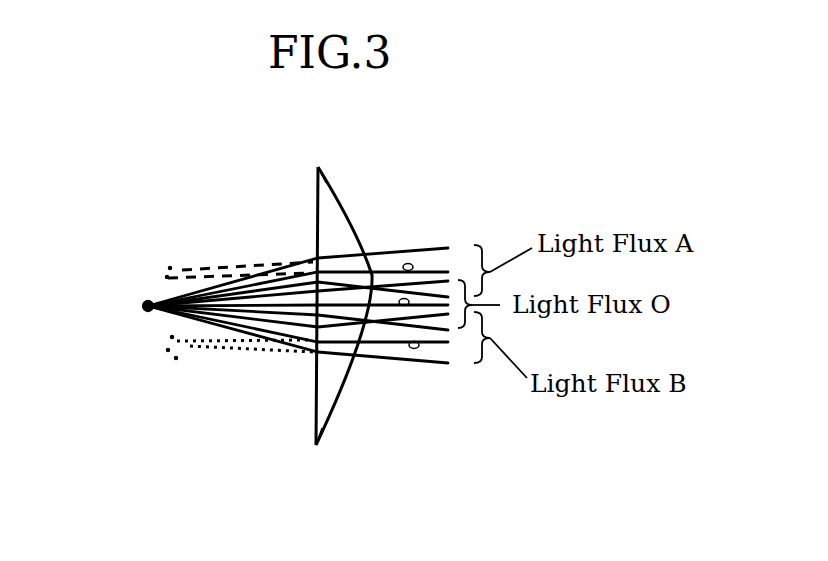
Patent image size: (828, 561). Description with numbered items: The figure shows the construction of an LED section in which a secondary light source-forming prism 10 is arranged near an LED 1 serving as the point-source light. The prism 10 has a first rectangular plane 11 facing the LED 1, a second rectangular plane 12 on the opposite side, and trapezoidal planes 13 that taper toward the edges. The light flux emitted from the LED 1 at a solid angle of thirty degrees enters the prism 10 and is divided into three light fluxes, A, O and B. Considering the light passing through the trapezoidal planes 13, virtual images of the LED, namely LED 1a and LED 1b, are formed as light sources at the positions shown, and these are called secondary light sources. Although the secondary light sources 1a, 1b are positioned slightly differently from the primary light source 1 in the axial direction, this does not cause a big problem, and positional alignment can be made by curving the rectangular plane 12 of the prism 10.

The LED 1 is at (140, 302).
The virtual image LED 1a is at (188, 266).
The virtual image LED 1b is at (162, 349).
The secondary light source-forming prism 10 is at (322, 324).
The first rectangular plane 11 is at (316, 222).
The second rectangular plane 12 is at (372, 277).
The trapezoidal planes 13 is at (333, 211).